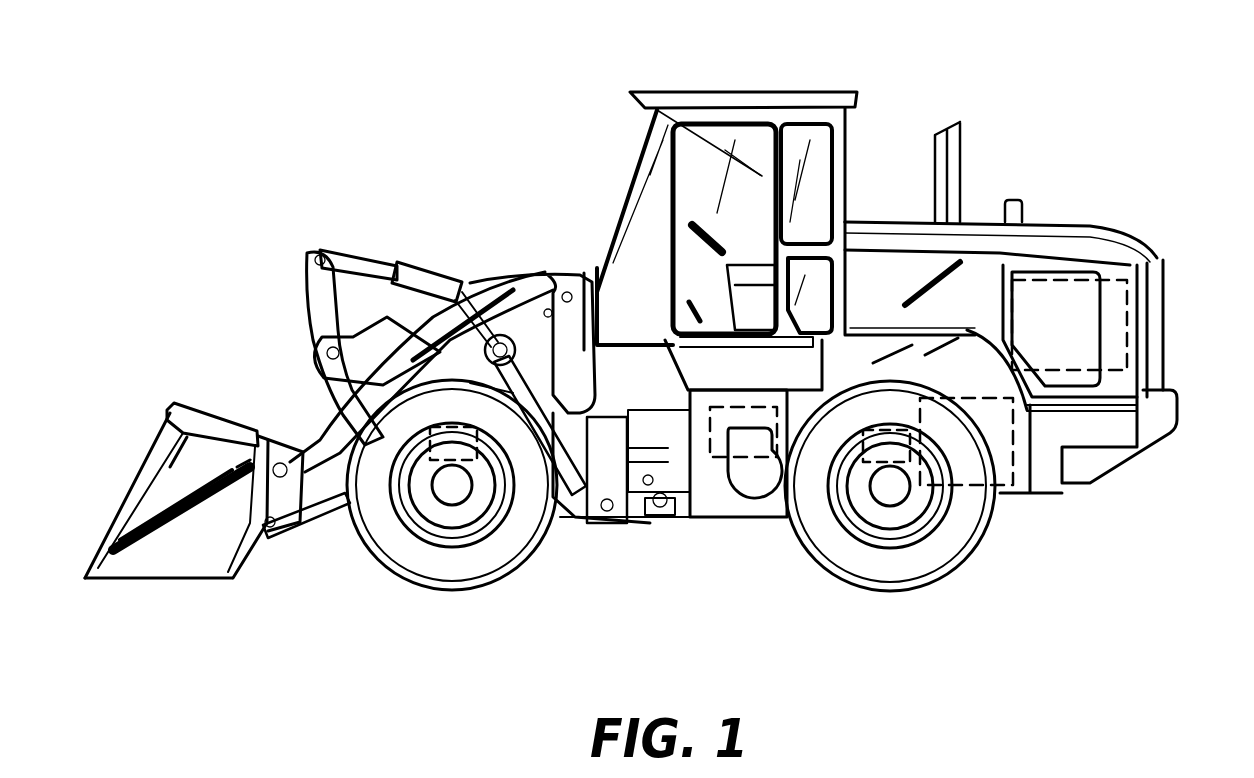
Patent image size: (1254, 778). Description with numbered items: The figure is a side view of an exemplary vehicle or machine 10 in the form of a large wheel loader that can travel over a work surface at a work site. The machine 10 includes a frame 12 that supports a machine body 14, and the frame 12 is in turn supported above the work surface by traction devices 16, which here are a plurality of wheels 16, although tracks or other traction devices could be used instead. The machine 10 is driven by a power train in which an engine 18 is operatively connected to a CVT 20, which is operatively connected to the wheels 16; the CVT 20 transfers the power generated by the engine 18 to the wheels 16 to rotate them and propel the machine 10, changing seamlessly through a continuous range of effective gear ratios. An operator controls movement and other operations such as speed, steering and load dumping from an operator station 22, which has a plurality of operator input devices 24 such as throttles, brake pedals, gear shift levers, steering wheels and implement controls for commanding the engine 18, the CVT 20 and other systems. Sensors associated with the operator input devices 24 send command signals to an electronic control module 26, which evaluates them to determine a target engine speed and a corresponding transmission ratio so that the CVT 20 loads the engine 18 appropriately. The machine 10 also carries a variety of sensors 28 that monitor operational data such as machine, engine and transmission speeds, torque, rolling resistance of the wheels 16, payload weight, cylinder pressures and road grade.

The machine 10 is at (360, 116).
The frame 12 is at (1108, 468).
The machine body 14 is at (1035, 248).
The traction devices 16 is at (535, 547).
The engine 18 is at (1133, 330).
The CVT 20 is at (1008, 497).
The operator station 22 is at (649, 94).
The operator input devices 24 is at (686, 306).
The electronic control module (ECM) 26 is at (742, 462).
The sensors 28 is at (453, 462).